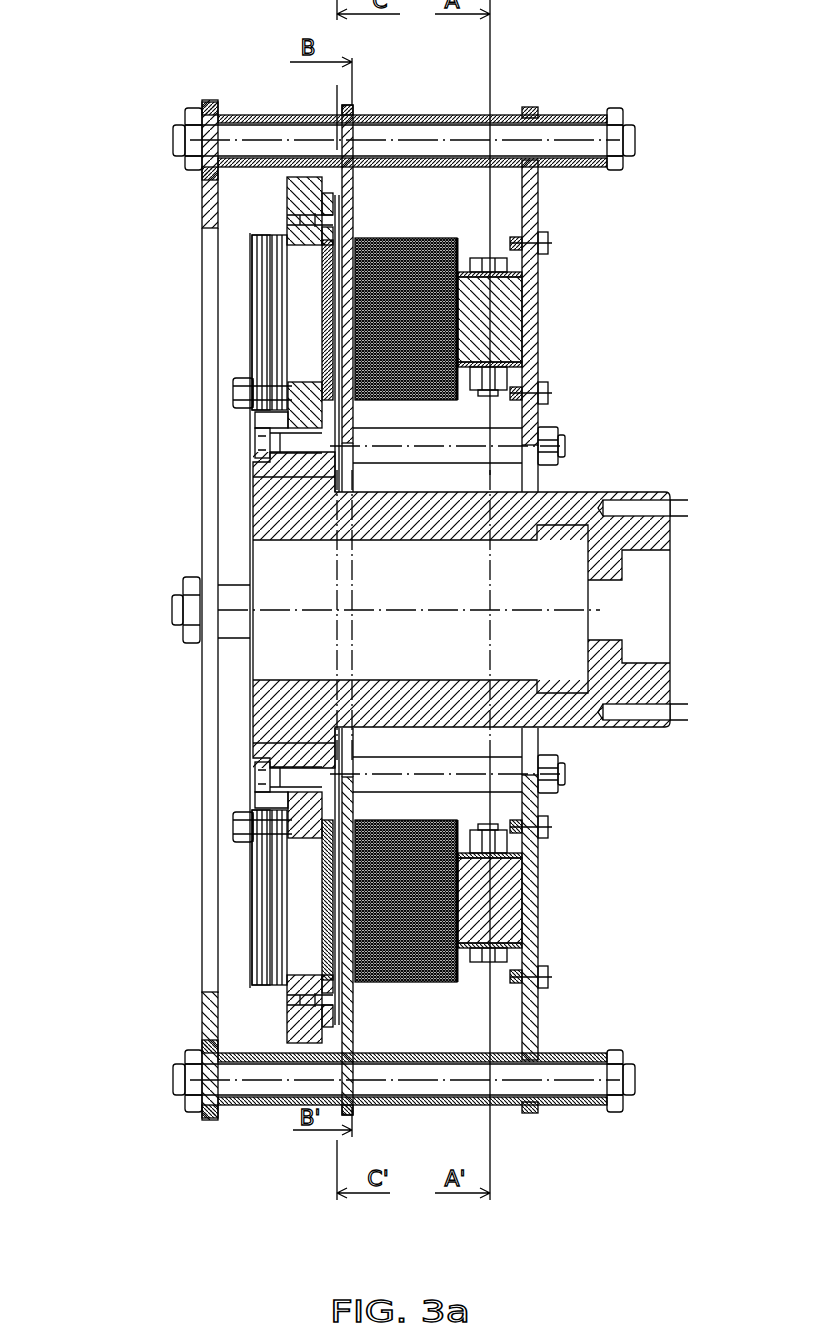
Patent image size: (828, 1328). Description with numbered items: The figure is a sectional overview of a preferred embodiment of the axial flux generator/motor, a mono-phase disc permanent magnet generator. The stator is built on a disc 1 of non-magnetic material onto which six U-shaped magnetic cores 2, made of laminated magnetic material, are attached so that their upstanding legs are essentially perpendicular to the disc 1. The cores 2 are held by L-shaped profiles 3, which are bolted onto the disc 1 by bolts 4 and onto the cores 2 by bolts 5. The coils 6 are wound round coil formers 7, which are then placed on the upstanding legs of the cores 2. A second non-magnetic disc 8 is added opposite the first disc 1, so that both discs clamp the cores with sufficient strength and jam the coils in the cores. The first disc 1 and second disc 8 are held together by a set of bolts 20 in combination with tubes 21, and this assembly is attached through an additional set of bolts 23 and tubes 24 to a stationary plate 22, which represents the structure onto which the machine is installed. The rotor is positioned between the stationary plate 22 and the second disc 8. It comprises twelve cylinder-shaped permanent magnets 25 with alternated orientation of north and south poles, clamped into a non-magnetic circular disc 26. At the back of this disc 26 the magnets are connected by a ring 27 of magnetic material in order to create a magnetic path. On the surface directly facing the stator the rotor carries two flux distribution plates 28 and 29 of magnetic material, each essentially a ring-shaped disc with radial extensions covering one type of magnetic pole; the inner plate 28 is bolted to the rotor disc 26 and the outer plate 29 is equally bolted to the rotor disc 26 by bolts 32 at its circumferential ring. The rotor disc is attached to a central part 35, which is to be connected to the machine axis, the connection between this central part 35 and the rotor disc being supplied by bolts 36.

The disc 1 is at (530, 222).
The magnetic cores 2 is at (502, 323).
The L-shaped profiles 3 is at (515, 383).
The bolts 4 is at (543, 383).
The bolts 5 is at (478, 262).
The coils 6 is at (380, 240).
The coil formers 7 is at (458, 238).
The second non-magnetic disc 8 is at (347, 112).
The bolts 20 is at (565, 448).
The tubes 21 is at (397, 437).
The stationary plate 22 is at (210, 183).
The bolts 23 is at (578, 135).
The tubes 24 is at (298, 116).
The permanent magnets 25 is at (297, 324).
The non-magnetic circular disc 26 is at (300, 198).
The ring 27 is at (262, 315).
The inner flux distribution plate 28 is at (255, 413).
The outer flux distribution plate 29 is at (320, 338).
The bolts 32 is at (312, 222).
The central part 35 is at (275, 512).
The bolts 36 is at (255, 455).